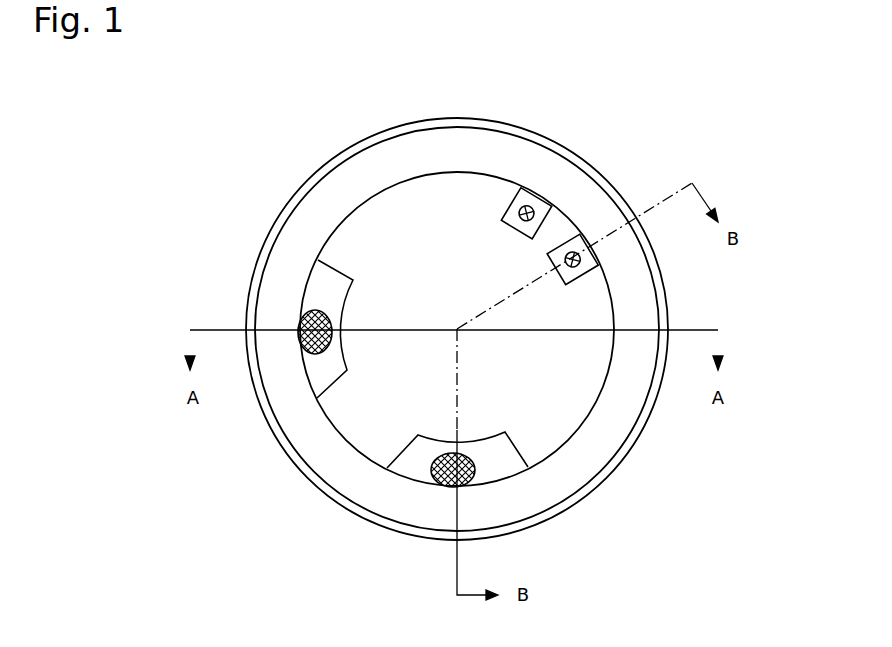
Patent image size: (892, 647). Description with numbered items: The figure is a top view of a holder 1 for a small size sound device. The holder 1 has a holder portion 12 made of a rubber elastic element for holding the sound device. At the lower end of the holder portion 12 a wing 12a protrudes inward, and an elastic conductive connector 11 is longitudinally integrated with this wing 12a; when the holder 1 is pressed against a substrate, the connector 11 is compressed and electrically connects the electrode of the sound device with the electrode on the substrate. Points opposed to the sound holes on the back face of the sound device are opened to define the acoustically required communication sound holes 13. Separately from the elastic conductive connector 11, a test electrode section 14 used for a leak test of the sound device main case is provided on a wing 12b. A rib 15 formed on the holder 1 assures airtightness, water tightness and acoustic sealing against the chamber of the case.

The holder 1 is at (190, 263).
The elastic conductive connector 11 is at (305, 342).
The holder portion 12 is at (322, 222).
The wing 12a is at (348, 297).
The wing 12b is at (502, 222).
The communication sound holes 13 is at (562, 407).
The test electrode section 14 is at (578, 257).
The rib 15 is at (306, 479).